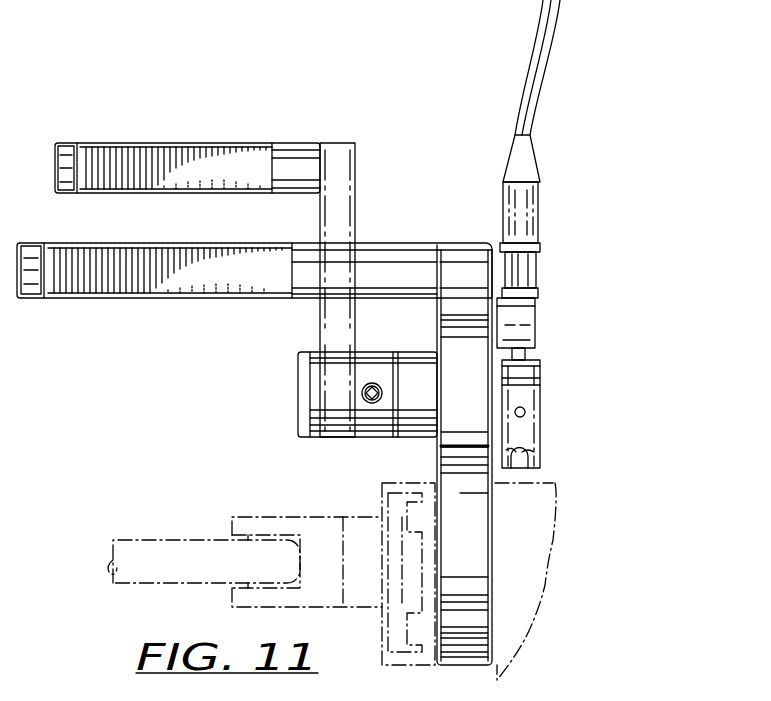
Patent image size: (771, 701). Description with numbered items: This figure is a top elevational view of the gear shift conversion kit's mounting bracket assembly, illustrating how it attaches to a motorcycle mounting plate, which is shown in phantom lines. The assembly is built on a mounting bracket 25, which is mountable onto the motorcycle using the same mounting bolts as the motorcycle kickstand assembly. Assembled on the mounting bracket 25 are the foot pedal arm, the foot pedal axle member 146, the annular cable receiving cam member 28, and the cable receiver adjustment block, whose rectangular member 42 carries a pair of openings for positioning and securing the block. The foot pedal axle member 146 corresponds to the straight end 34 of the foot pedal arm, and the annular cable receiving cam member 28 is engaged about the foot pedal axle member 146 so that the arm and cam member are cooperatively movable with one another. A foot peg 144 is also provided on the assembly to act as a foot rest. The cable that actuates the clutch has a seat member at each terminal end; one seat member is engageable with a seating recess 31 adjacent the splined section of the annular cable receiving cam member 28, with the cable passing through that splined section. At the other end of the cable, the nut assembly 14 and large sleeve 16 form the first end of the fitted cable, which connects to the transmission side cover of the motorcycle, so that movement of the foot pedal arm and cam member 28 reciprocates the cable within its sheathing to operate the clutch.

The foot peg 144 is at (120, 298).
The straight end 34 is at (344, 187).
The mounting bracket 25 is at (478, 550).
The large sleeve 16 is at (535, 213).
The nut assembly 14 is at (533, 272).
The rectangular member 42 is at (527, 321).
The annular cable receiving cam member 28 is at (538, 373).
The foot pedal axle member 146 is at (535, 399).
The seating recess 31 is at (533, 455).